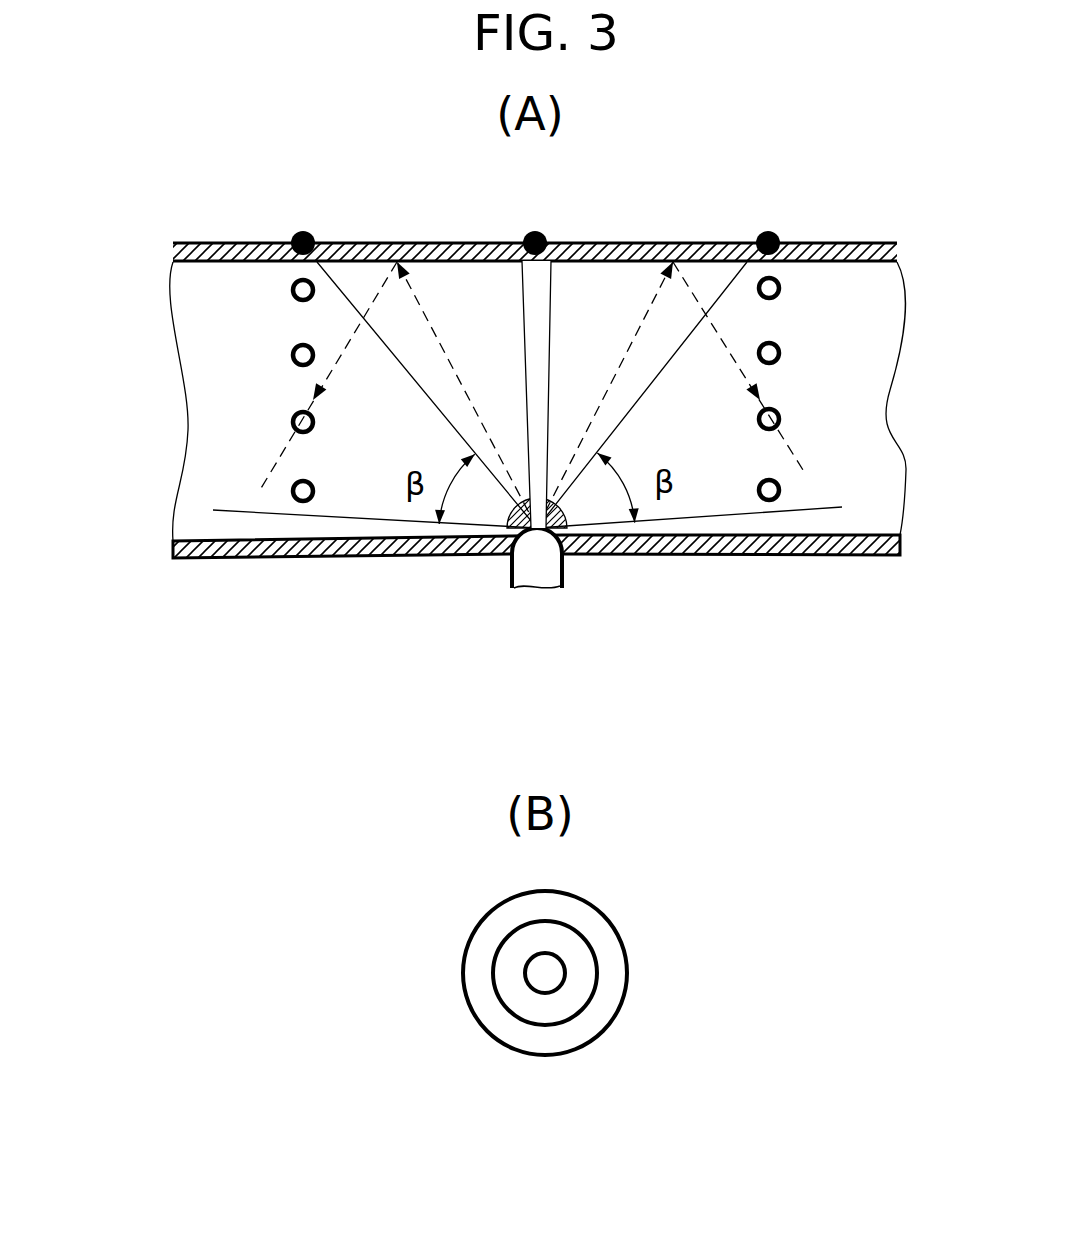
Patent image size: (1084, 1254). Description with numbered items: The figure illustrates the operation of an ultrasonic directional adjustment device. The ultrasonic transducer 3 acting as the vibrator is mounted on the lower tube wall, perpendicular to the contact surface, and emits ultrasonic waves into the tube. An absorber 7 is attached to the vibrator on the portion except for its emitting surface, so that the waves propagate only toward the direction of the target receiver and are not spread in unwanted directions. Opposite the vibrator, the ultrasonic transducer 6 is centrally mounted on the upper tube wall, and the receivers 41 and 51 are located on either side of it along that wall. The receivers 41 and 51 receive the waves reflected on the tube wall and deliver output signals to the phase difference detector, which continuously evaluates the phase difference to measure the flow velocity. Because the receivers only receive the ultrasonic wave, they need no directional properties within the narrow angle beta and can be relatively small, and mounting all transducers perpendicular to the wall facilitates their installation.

The ultrasonic transducer 3 is at (542, 560).
The absorber 7 is at (527, 497).
The ultrasonic transducer 6 is at (537, 232).
The receiver 41 is at (303, 232).
The receiver 51 is at (769, 232).